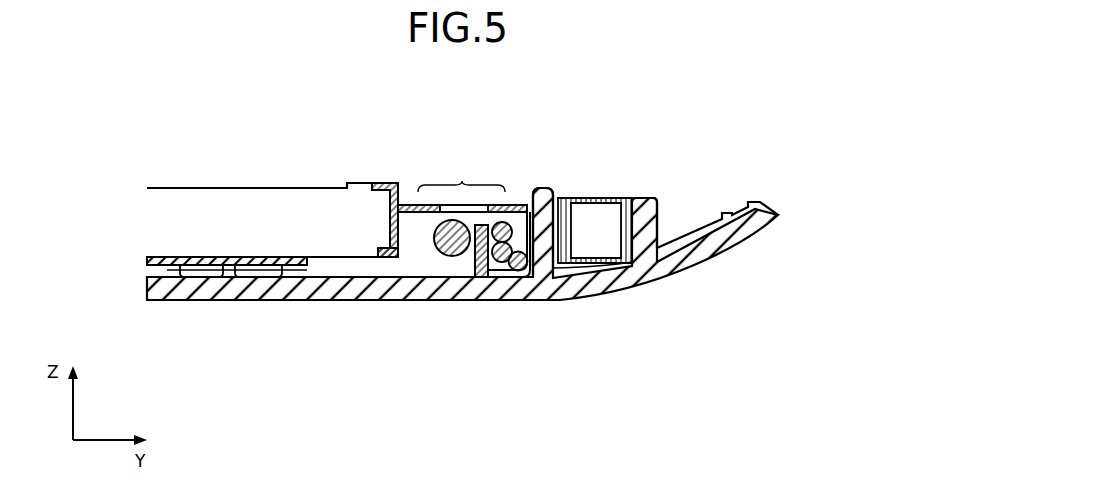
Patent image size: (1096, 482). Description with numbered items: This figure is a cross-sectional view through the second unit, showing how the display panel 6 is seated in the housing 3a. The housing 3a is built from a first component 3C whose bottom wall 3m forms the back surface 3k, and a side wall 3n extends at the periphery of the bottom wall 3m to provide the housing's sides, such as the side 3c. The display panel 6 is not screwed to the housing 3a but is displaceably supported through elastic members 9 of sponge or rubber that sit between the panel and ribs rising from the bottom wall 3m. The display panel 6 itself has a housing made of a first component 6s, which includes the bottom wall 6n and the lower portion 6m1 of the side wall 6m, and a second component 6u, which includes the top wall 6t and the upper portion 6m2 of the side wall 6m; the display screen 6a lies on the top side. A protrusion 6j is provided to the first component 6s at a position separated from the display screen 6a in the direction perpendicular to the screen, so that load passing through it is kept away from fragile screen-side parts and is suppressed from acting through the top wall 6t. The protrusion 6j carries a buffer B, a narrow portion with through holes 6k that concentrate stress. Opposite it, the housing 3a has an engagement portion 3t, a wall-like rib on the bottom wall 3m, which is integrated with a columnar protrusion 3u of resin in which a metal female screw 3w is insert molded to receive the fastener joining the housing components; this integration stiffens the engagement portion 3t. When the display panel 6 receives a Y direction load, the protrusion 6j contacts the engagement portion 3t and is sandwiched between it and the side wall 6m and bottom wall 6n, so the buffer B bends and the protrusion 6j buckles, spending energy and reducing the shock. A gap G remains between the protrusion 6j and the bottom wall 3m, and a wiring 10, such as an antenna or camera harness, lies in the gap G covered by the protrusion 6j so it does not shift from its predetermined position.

The display panel 6 is at (162, 182).
The display screen 6a is at (237, 188).
The top wall 6t is at (369, 190).
The second component 6u is at (373, 184).
The upper portion of side wall 6m2 is at (458, 150).
The side wall 6m is at (400, 203).
The lower portion of side wall 6m1 is at (399, 238).
The through holes 6k is at (448, 204).
The buffer B is at (462, 181).
The protrusion 6j is at (516, 198).
The bottom wall 6n is at (362, 309).
The first component 6s is at (380, 254).
The engagement portion 3t is at (540, 190).
The female screw 3w is at (628, 200).
The protrusion 3u is at (665, 205).
The side wall 3n is at (710, 235).
The side 3c is at (781, 215).
The housing 3a is at (462, 264).
The first component 3C is at (679, 284).
The elastic members 9 is at (191, 266).
The bottom wall 3m is at (228, 265).
The back surface 3k is at (279, 272).
The wiring 10 is at (443, 256).
The gap G is at (464, 266).